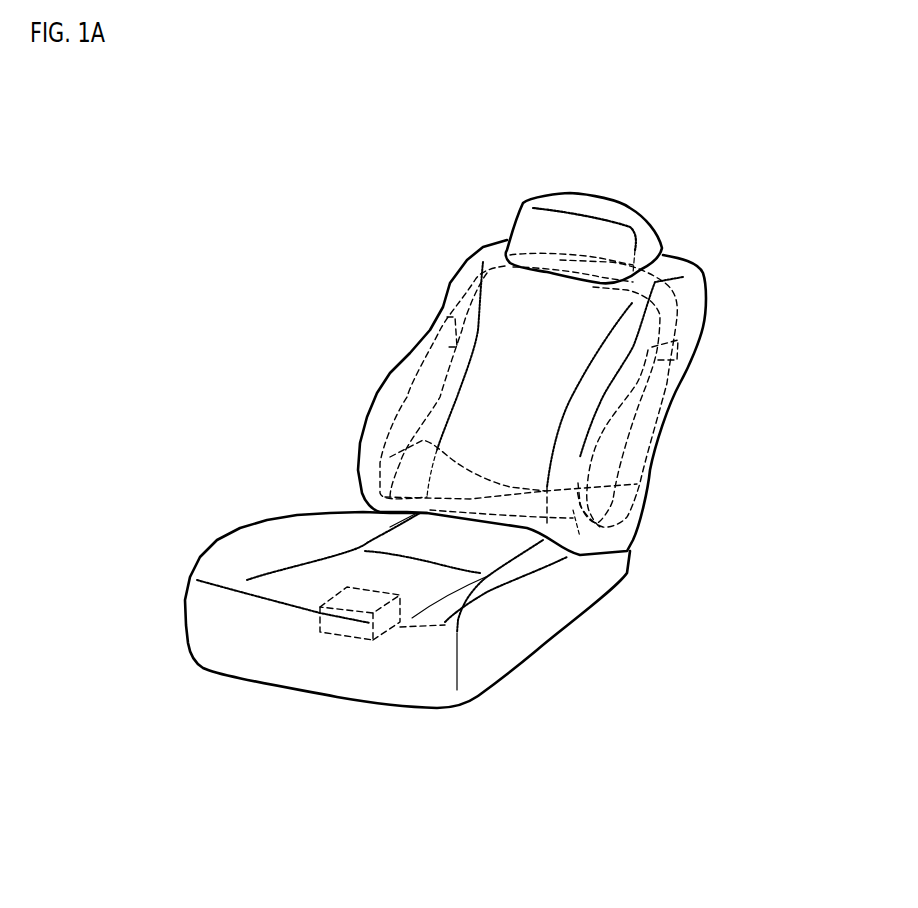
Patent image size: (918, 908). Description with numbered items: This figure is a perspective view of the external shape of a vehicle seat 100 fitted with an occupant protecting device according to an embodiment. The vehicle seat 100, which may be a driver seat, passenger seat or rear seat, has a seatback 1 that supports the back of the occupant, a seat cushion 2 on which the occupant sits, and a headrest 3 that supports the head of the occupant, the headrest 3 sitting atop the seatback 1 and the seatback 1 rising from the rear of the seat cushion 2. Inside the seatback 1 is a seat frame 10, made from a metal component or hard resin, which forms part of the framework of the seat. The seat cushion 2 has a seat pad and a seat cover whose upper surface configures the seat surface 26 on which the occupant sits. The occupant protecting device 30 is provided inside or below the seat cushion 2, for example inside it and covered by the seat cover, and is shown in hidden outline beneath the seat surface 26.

The vehicle seat 100 is at (266, 183).
The seatback 1 is at (557, 397).
The seat cushion 2 is at (402, 600).
The headrest 3 is at (607, 197).
The seat frame 10 is at (412, 407).
The seat surface 26 is at (293, 587).
The occupant protecting device 30 is at (350, 637).